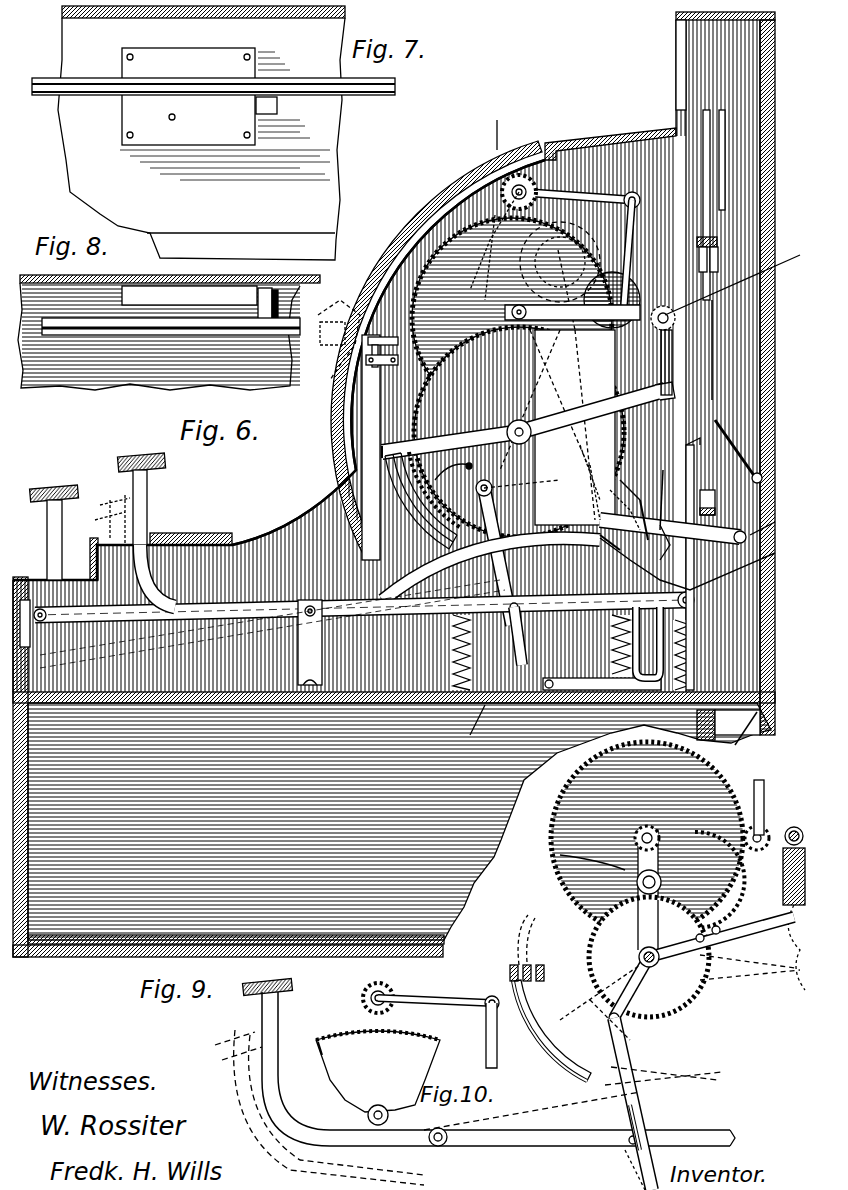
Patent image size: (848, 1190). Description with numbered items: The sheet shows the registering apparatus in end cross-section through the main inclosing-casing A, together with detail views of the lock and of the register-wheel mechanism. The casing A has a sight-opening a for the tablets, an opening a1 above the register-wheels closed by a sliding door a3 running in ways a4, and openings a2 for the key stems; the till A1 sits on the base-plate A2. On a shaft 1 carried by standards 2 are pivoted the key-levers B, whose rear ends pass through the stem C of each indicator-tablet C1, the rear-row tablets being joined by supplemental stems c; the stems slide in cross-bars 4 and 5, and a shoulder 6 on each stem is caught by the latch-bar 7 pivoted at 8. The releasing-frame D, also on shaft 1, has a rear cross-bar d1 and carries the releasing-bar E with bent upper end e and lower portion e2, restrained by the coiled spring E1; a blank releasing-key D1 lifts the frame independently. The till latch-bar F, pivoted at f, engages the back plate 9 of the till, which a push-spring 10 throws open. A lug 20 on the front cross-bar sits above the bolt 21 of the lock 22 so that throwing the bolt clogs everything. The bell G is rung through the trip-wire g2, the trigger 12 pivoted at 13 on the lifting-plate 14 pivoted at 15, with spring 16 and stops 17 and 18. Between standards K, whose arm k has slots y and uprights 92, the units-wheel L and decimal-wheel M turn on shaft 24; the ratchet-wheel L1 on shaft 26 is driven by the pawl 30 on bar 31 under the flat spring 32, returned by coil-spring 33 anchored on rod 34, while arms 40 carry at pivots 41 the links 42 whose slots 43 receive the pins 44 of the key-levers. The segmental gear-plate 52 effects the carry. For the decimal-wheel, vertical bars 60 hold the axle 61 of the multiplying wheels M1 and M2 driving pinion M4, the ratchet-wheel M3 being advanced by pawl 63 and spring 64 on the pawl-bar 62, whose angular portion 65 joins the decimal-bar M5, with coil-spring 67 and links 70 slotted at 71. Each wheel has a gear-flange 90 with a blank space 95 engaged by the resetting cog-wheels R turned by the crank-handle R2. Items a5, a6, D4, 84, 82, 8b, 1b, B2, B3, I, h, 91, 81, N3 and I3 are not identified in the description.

In FIG. 7, the lock 22 is at (188, 96).
In FIG. 8, the lock 22 is at (189, 295).
In FIG. 7, the bolt 21 is at (266, 105).
In FIG. 8, the bolt 21 is at (262, 288).
In FIG. 7, the opening a1 is at (112, 88).
In FIG. 8, the opening a1 is at (85, 338).
In FIG. 6, the main inclosing-casing A is at (240, 540).
In FIG. 6, the change drawer or till A1 is at (399, 821).
In FIG. 6, the base-plate A2 is at (190, 705).
In FIG. 6, the sight-opening a is at (676, 72).
In FIG. 6, the openings a2 is at (112, 514).
In FIG. 6, the door a3 is at (395, 250).
In FIG. 6, the ways a4 is at (330, 455).
In FIG. 6, the bracket a5 is at (339, 335).
In FIG. 6, the pivot a6 is at (35, 600).
In FIG. 6, the lug or stud 20 is at (326, 319).
In FIG. 6, the releasing-frame D is at (380, 470).
In FIG. 6, the blank releasing-key D1 is at (360, 607).
In FIG. 6, the rear cross-bar d1 is at (694, 598).
In FIG. 6, the spring D4 is at (695, 655).
In FIG. 6, the units-wheel L is at (512, 318).
In FIG. 6, the ratchet-wheel L1 is at (519, 432).
In FIG. 6, the pawl 30 is at (655, 400).
In FIG. 6, the pawl bar or lever 31 is at (590, 464).
In FIG. 6, the flat spring 32 is at (675, 398).
In FIG. 6, the sector arcs 84 is at (425, 525).
In FIG. 6, the arms 40 is at (470, 488).
In FIG. 6, the spring 82 is at (452, 468).
In FIG. 6, the pivot 8 is at (473, 463).
In FIG. 6, the pivot 8 8b is at (762, 476).
In FIG. 6, the standard K is at (502, 556).
In FIG. 6, the shaft 26 is at (495, 487).
In FIG. 10, the shaft 26 is at (640, 947).
In FIG. 6, the pivot 41 is at (522, 487).
In FIG. 10, the pivot 41 is at (620, 1022).
In FIG. 6, the lost-motion links 42 is at (501, 548).
In FIG. 6, the pivot 13 is at (492, 569).
In FIG. 6, the stop 17 is at (621, 551).
In FIG. 6, the standards 2 is at (310, 642).
In FIG. 6, the shaft 1 is at (312, 604).
In FIG. 6, the bracket 1 1b is at (697, 242).
In FIG. 6, the pins 44 is at (518, 606).
In FIG. 9, the pins 44 is at (637, 1135).
In FIG. 6, the key-levers B is at (501, 636).
In FIG. 9, the key-levers B is at (520, 1146).
In FIG. 6, the pedal B B2 is at (150, 530).
In FIG. 6, the pedal B B3 is at (70, 545).
In FIG. 6, the latch-bar F is at (602, 683).
In FIG. 6, the coiled spring E1 is at (610, 640).
In FIG. 6, the downwardly-bent portion e2 is at (648, 642).
In FIG. 6, the bent upper end e is at (672, 564).
In FIG. 6, the lug or shoulder 6 is at (716, 500).
In FIG. 6, the cross-bar 5 is at (560, 188).
In FIG. 9, the cross-bar 5 is at (410, 1000).
In FIG. 6, the upright 92 is at (614, 260).
In FIG. 6, the rearwardly-projecting arm k is at (572, 312).
In FIG. 6, the common shaft 24 is at (525, 300).
In FIG. 10, the common shaft 24 is at (645, 825).
In FIG. 6, the cross-bar 4 is at (662, 318).
In FIG. 6, the coil-spring 33 is at (672, 360).
In FIG. 6, the cog-wheels R is at (510, 175).
In FIG. 9, the cog-wheels R is at (320, 980).
In FIG. 6, the crank-handle R2 is at (494, 241).
In FIG. 6, the link I is at (486, 257).
In FIG. 6, the bell or gong G is at (590, 268).
In FIG. 10, the bell or gong G is at (660, 846).
In FIG. 6, the segmental gear-plate 52 is at (562, 262).
In FIG. 6, the line h is at (492, 136).
In FIG. 6, the indicator-tablet C1 is at (712, 172).
In FIG. 6, the stem C is at (735, 360).
In FIG. 6, the supplemental stems c is at (720, 322).
In FIG. 6, the slots y is at (736, 277).
In FIG. 6, the latch-bar 7 is at (745, 445).
In FIG. 6, the lifting-plate 14 is at (673, 532).
In FIG. 6, the pivot 15 is at (773, 522).
In FIG. 6, the releasing-bar E is at (695, 564).
In FIG. 6, the stop 18 is at (672, 544).
In FIG. 6, the light spring 16 is at (633, 509).
In FIG. 6, the trigger 12 is at (640, 508).
In FIG. 6, the pivot f is at (602, 597).
In FIG. 6, the trip-wire g2 is at (632, 470).
In FIG. 6, the link 9' 91 is at (598, 492).
In FIG. 6, the back plate 9 is at (697, 722).
In FIG. 6, the push-spring 10 is at (748, 736).
In FIG. 6, the slots 43 is at (478, 724).
In FIG. 9, the blank space 95 is at (378, 1076).
In FIG. 9, the gear-flange 90 is at (320, 1034).
In FIG. 10, the decimal-wheel M is at (647, 838).
In FIG. 10, the pinion M1 is at (592, 864).
In FIG. 10, the gear-wheel M2 is at (690, 870).
In FIG. 10, the ratchet-wheel M3 is at (649, 957).
In FIG. 10, the pinion M4 is at (655, 808).
In FIG. 10, the pawl-operating bar M5 is at (535, 955).
In FIG. 10, the axle 61 is at (655, 876).
In FIG. 10, the rod 34 is at (794, 829).
In FIG. 10, the coil-spring 67 is at (805, 919).
In FIG. 10, the vertical bars 60 is at (648, 925).
In FIG. 10, the pawl bar or lever 62 is at (640, 960).
In FIG. 10, the pawl 63 is at (704, 932).
In FIG. 10, the spring 64 is at (720, 925).
In FIG. 10, the links or lost-motion connections 70 is at (640, 1080).
In FIG. 10, the slots 71 is at (630, 1168).
In FIG. 10, the outer portion 65 is at (545, 995).
In FIG. 10, the sector edge 81 is at (548, 1060).
In FIG. 10, the stops N3 is at (510, 972).
In FIG. 10, the guide I3 is at (541, 945).